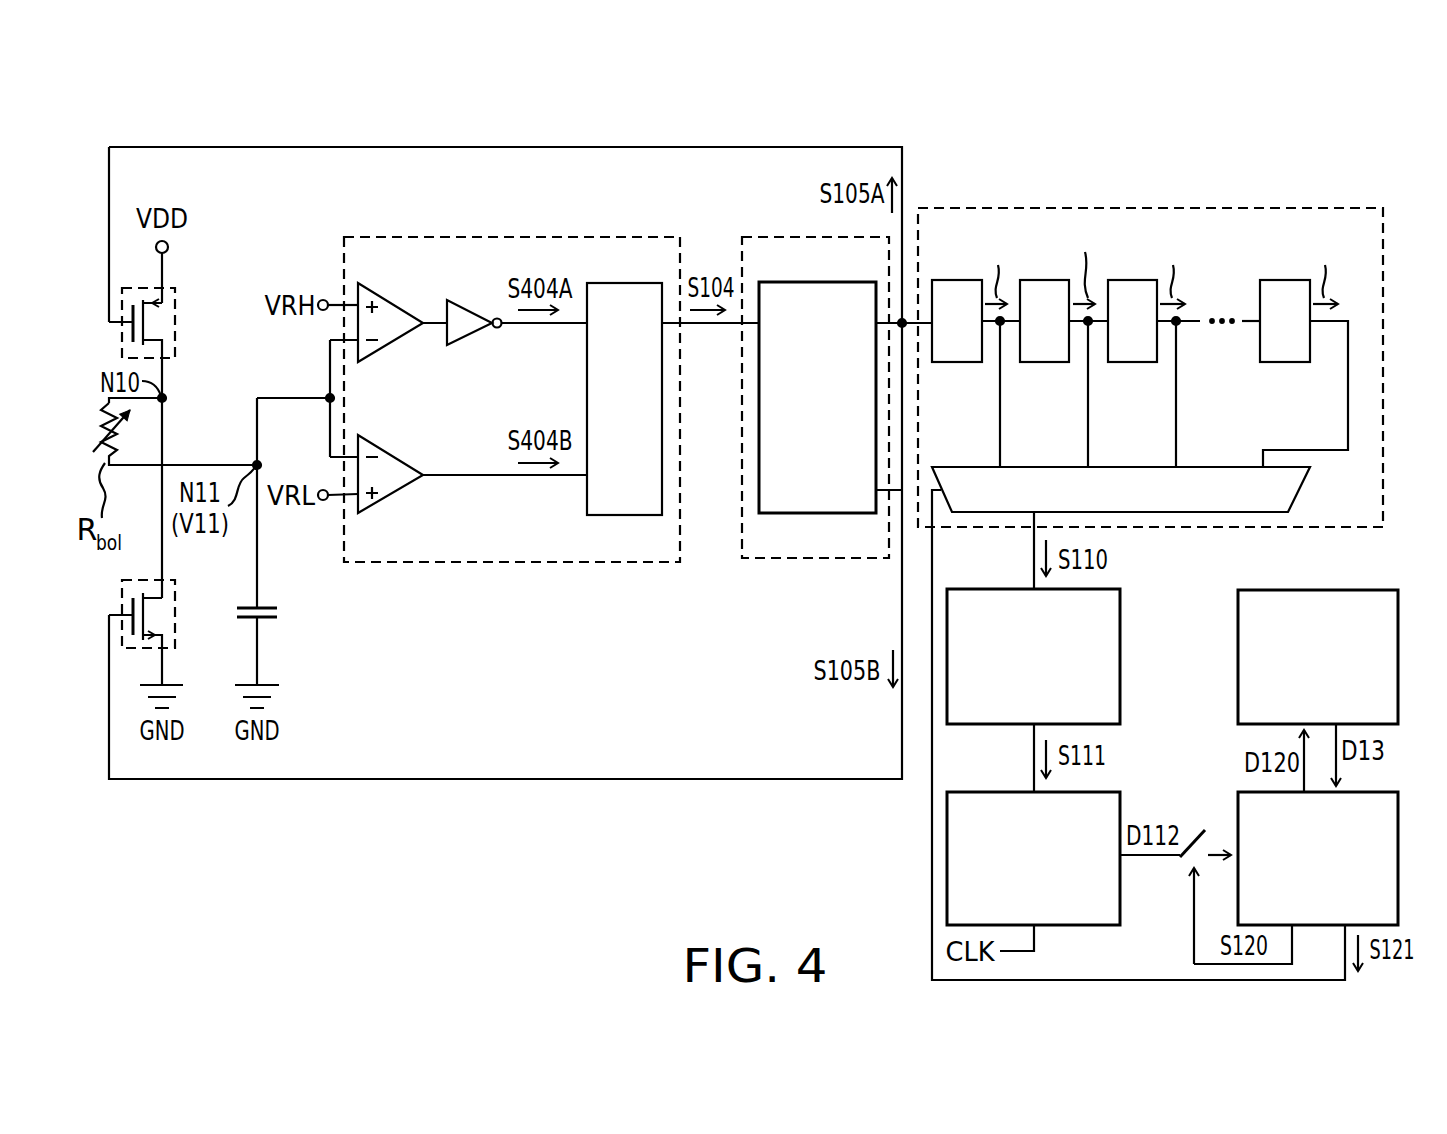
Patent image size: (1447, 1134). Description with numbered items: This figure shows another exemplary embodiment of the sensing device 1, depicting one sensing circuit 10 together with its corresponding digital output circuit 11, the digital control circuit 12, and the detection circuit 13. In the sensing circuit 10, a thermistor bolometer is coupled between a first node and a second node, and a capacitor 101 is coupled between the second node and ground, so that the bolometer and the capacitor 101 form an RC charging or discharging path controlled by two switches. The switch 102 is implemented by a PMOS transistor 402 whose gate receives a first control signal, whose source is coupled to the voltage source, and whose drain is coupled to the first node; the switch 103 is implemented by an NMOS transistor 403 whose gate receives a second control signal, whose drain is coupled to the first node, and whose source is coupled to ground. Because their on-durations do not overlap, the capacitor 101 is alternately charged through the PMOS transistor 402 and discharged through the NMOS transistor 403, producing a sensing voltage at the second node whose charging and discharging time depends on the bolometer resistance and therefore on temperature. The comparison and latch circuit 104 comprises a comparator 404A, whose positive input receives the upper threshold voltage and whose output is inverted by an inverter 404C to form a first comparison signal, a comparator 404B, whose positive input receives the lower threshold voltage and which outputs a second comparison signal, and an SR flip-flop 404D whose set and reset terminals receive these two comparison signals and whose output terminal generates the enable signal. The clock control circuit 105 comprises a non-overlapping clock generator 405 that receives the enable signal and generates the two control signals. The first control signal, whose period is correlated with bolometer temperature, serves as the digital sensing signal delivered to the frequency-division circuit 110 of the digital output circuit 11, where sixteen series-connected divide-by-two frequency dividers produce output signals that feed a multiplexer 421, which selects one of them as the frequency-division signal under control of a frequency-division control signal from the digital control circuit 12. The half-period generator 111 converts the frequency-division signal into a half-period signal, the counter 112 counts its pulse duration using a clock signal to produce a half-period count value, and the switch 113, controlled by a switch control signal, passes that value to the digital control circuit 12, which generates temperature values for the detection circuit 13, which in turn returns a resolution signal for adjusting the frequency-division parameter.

The sensing device 1 is at (111, 106).
The sensing circuit 10 is at (603, 137).
The digital output circuit 11 is at (1238, 176).
The digital control circuit 12 is at (1398, 792).
The detection circuit 13 is at (1238, 590).
The capacitor 101 is at (278, 613).
The switch 102 is at (176, 290).
The switch 103 is at (176, 582).
The comparison and latch circuit 104 is at (510, 237).
The clock control circuit 105 is at (760, 237).
The frequency-division circuit 110 is at (1150, 208).
The half-period generator 111 is at (947, 589).
The counter 112 is at (947, 792).
The switch 113 is at (1190, 830).
The PMOS transistor 402 is at (158, 322).
The NMOS transistor 403 is at (158, 613).
The comparator 404A is at (390, 300).
The comparator 404B is at (390, 455).
The inverter 404C is at (472, 343).
The SR flip-flop 404D is at (588, 283).
The non-overlapping clock generator 405 is at (760, 282).
The multiplexer 421 is at (1300, 492).